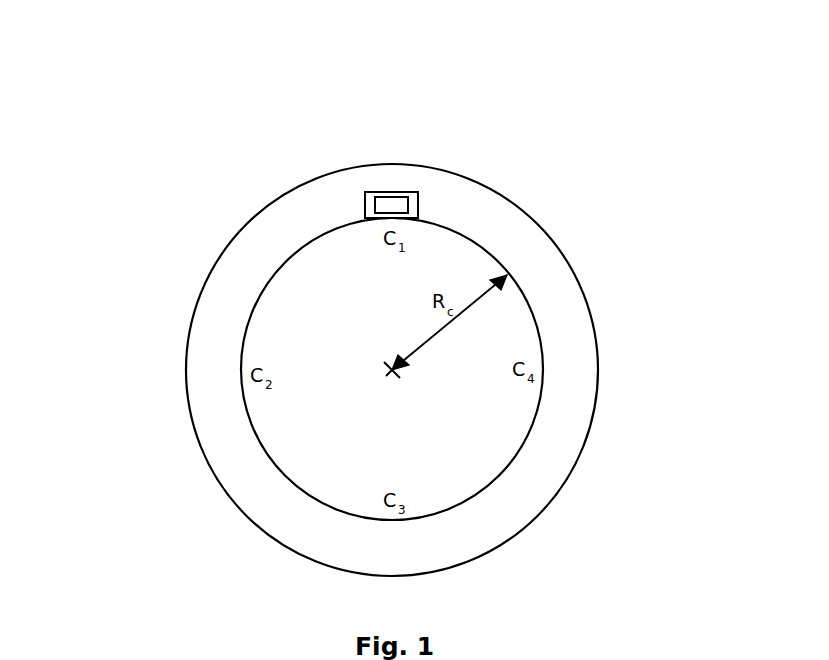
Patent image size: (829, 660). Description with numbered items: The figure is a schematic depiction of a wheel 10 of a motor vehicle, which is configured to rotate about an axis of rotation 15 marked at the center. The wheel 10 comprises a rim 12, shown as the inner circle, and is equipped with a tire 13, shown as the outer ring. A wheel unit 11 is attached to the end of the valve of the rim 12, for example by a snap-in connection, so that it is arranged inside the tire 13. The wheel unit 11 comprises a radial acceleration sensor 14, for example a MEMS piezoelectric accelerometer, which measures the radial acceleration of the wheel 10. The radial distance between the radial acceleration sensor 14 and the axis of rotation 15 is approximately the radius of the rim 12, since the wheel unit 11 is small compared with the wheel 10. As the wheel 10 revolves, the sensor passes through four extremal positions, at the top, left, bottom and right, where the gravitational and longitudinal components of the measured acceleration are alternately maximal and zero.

The wheel 10 is at (178, 228).
The wheel unit 11 is at (407, 193).
The rim 12 is at (503, 418).
The tire 13 is at (565, 318).
The radial acceleration sensor 14 is at (382, 193).
The axis of rotation 15 is at (390, 373).